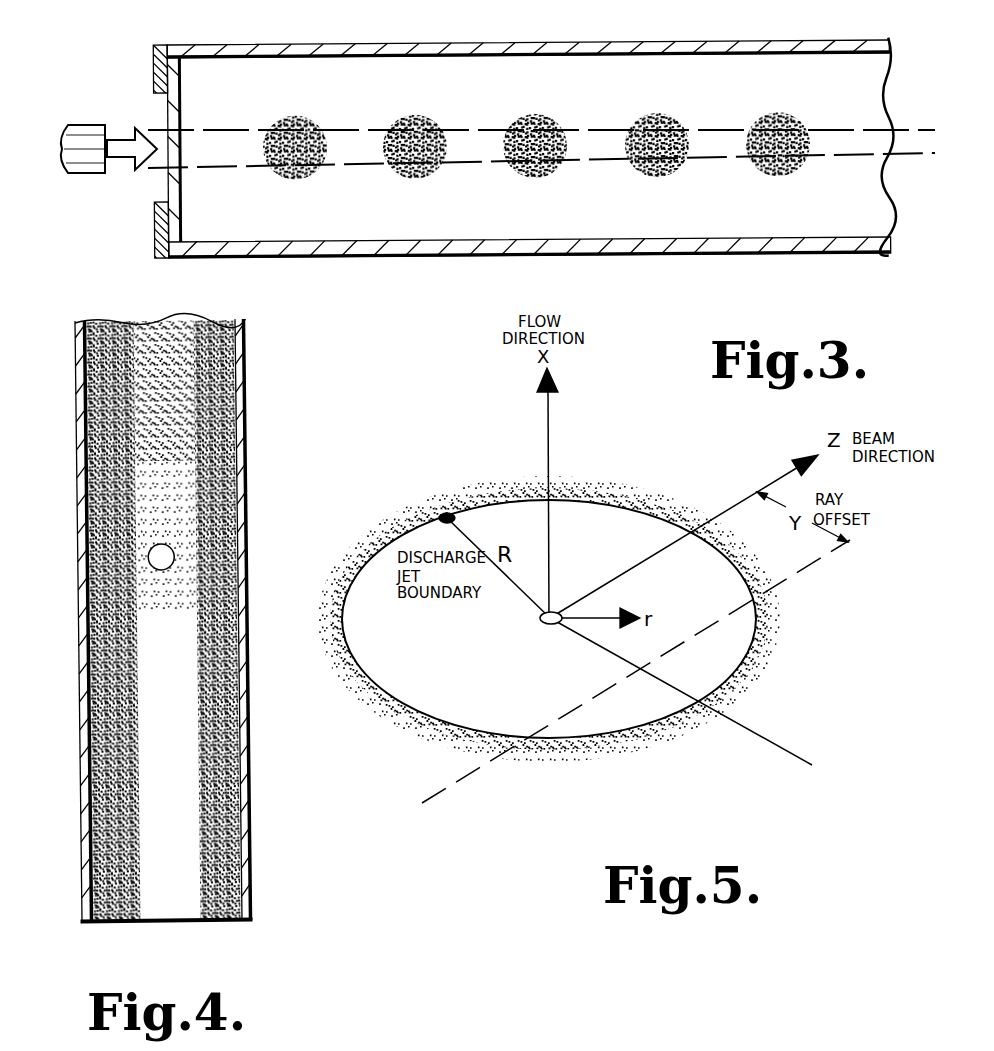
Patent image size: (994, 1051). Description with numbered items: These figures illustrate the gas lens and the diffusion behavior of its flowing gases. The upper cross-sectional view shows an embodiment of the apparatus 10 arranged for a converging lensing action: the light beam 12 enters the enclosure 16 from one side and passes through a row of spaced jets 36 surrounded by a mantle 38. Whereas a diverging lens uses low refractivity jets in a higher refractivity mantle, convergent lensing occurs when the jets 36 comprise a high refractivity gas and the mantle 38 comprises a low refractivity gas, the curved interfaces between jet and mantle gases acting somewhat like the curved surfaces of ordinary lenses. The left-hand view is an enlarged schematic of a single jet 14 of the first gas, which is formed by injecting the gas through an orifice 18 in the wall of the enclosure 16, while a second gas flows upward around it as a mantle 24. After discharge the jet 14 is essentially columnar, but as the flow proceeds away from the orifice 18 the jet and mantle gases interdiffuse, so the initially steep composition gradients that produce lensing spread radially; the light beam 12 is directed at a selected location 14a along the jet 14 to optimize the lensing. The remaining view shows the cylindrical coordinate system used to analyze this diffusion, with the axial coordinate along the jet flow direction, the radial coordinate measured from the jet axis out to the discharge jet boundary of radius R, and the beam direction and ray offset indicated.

In FIG. 3, the apparatus 10 is at (498, 149).
In FIG. 3, the light beam 12 is at (118, 136).
In FIG. 4, the light beam 12 is at (180, 556).
In FIG. 3, the enclosure 16 is at (241, 43).
In FIG. 3, the jets 36 is at (290, 170).
In FIG. 3, the mantle 38 is at (742, 216).
In FIG. 4, the jet 14 is at (173, 832).
In FIG. 4, the selected location 14a is at (164, 546).
In FIG. 4, the orifice 18 is at (220, 922).
In FIG. 4, the mantle 24 is at (222, 773).